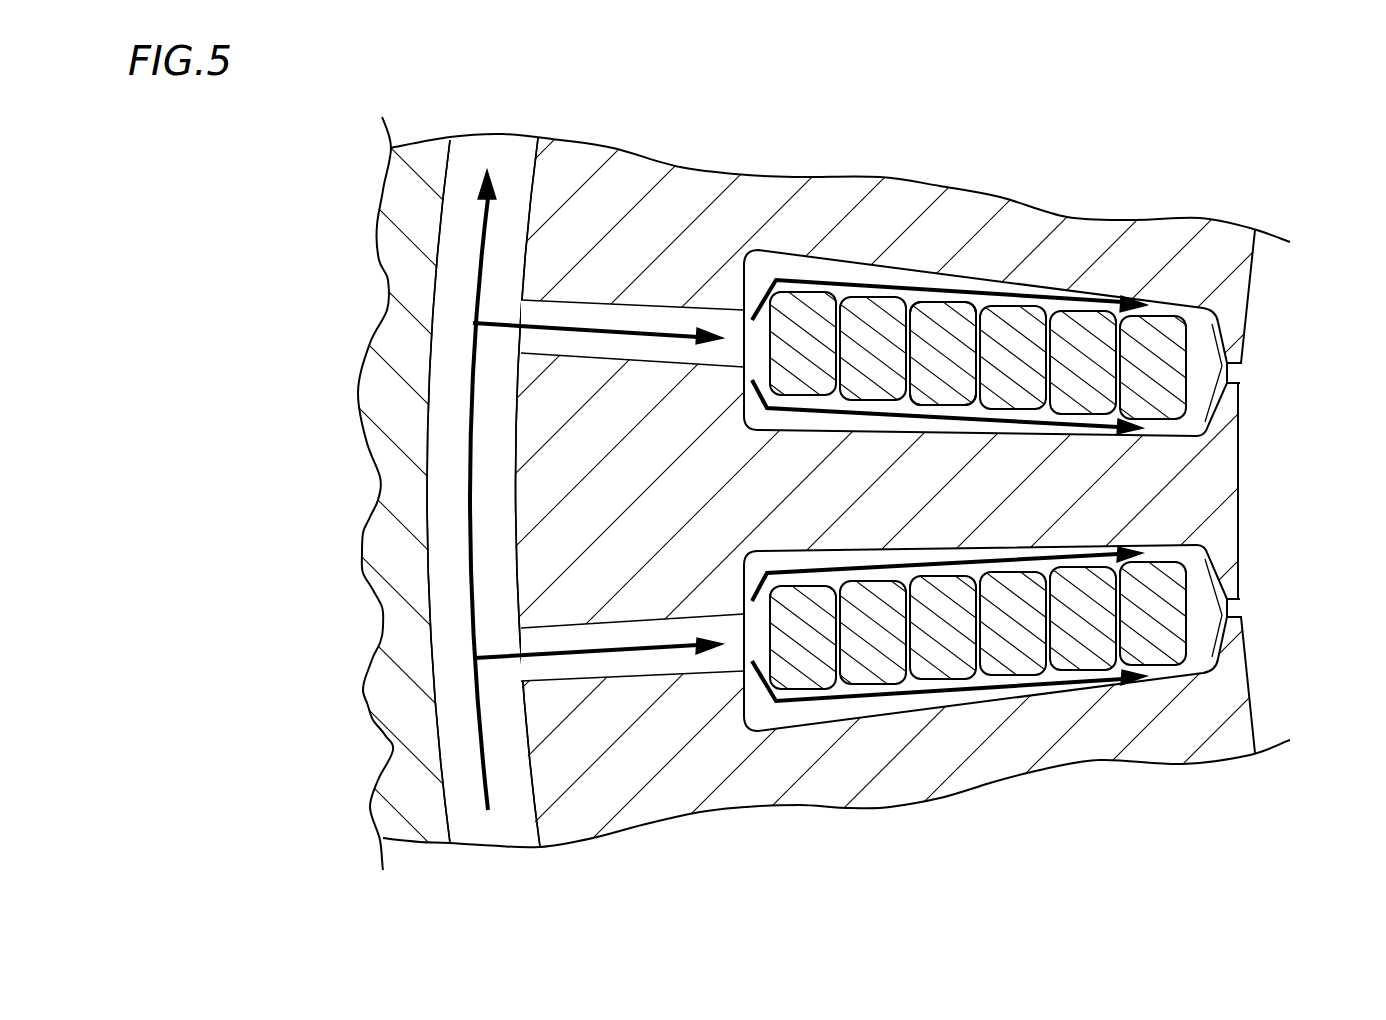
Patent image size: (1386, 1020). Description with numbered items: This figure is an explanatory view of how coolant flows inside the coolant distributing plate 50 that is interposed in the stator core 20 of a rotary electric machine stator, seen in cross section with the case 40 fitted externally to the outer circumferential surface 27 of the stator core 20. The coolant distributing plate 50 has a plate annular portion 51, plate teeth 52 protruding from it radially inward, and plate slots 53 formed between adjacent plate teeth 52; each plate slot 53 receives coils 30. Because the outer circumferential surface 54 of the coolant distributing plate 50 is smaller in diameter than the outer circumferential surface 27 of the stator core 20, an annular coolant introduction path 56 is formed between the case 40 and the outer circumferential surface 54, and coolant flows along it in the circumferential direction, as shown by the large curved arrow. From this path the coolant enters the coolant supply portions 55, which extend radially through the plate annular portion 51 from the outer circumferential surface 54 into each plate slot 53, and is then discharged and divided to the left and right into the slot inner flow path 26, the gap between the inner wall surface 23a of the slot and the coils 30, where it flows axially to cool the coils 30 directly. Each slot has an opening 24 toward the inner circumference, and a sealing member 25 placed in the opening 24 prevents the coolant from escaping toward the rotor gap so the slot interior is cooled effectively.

The stator core 20 is at (425, 730).
The inner wall surface of the slot 23a is at (960, 318).
The opening 24 is at (1240, 372).
The sealing member 25 is at (1247, 344).
The slot inner flow path 26 is at (805, 270).
The outer circumferential surface of the stator core 27 is at (433, 751).
The coils 30 is at (1022, 657).
The case 40 is at (355, 812).
The coolant distributing plate 50 is at (515, 232).
The plate annular portion 51 is at (543, 415).
The plate teeth 52 is at (1060, 490).
The plate slots 53 is at (1197, 318).
The outer circumferential surface of the coolant distributing plate 54 is at (533, 168).
The coolant supply portion 55 is at (637, 313).
The annular coolant introduction path 56 is at (482, 831).